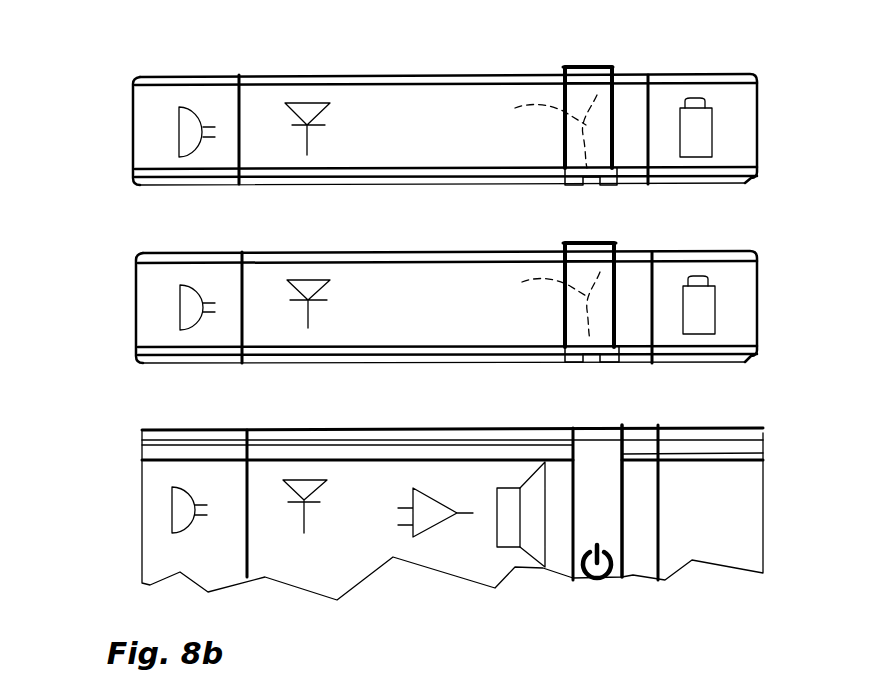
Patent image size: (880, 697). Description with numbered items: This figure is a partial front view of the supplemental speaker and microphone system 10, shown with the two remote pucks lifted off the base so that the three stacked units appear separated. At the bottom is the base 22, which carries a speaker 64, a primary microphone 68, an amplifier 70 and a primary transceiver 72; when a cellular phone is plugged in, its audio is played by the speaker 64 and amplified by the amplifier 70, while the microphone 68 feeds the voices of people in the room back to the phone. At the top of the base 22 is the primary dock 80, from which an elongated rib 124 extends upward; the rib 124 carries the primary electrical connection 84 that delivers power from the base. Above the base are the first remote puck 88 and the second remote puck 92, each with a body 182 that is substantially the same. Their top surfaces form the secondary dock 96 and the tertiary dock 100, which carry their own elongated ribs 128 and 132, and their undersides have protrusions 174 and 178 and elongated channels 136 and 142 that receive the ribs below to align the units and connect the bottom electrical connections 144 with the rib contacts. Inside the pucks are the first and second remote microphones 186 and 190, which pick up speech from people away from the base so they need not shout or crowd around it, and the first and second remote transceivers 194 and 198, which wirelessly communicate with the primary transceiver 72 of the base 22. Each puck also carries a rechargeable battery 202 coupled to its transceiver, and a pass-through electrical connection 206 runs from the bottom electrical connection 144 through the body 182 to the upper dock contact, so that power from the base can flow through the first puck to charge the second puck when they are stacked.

The supplemental speaker and microphone system 10 is at (117, 512).
The base 22 is at (770, 500).
The speaker 64 is at (517, 547).
The primary microphone 68 is at (188, 532).
The amplifier 70 is at (422, 525).
The primary transceiver 72 is at (305, 515).
The primary dock 80 is at (201, 427).
The primary electrical connection 84 is at (612, 423).
The first remote puck 88 is at (130, 280).
The second remote puck 92 is at (127, 147).
The secondary dock 96 is at (208, 247).
The tertiary dock 100 is at (214, 73).
The elongated rib 124 is at (590, 427).
The elongated rib 128 is at (582, 242).
The elongated rib 132 is at (582, 66).
The elongated channel 136 is at (580, 353).
The elongated channel 142 is at (580, 178).
The bottom electrical connection 144 is at (603, 183).
The protrusion 174 is at (358, 365).
The protrusion 178 is at (363, 187).
The body 182 is at (758, 102).
The first remote microphone 186 is at (188, 318).
The second remote microphone 190 is at (179, 127).
The first remote transceiver 194 is at (327, 290).
The second remote transceiver 198 is at (302, 100).
The rechargeable battery 202 is at (698, 137).
The pass-through electrical connection 206 is at (549, 217).